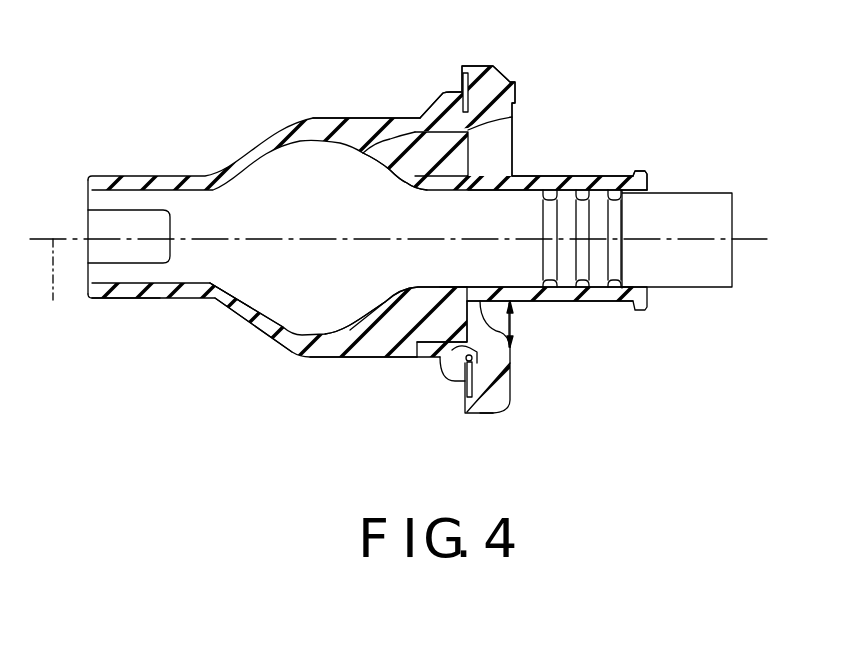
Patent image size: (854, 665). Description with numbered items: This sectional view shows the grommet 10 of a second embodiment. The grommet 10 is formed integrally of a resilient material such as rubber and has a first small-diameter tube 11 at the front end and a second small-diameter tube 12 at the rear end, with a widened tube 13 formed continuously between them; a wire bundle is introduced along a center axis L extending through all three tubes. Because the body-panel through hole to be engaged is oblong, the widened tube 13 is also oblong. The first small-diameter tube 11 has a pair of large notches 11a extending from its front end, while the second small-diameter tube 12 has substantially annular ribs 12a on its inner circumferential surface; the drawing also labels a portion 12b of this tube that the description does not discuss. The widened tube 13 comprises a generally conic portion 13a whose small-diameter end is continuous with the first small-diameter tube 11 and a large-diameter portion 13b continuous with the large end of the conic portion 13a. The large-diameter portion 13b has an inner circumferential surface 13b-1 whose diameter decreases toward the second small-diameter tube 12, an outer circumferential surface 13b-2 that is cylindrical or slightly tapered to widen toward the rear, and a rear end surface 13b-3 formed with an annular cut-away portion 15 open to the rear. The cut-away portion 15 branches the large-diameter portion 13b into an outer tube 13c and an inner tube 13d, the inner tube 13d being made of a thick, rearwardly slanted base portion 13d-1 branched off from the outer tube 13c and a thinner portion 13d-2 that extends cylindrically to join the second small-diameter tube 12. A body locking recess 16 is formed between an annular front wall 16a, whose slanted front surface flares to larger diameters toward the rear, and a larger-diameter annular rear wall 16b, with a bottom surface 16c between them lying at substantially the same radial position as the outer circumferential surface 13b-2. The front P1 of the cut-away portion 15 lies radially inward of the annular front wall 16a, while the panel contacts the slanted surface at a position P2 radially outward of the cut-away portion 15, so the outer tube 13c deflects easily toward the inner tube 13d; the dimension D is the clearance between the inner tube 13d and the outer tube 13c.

The grommet 10 is at (244, 81).
The first small-diameter tube 11 is at (133, 175).
The large notches 11a is at (123, 265).
The center axis L is at (55, 281).
The second small-diameter tube 12 is at (613, 175).
The annular ribs 12a is at (658, 287).
The tube end lip 12b is at (617, 218).
The widened tube 13 is at (287, 340).
The conic portion 13a is at (240, 317).
The large-diameter portion 13b is at (367, 353).
The inner circumferential surface 13b-1 is at (392, 182).
The outer circumferential surface 13b-2 is at (397, 117).
The rear end surface 13b-3 is at (512, 377).
The outer tube 13c is at (510, 350).
The inner tube 13d is at (628, 263).
The base portion 13d-1 is at (387, 310).
The thinner portion 13d-2 is at (462, 287).
The cut-away portion 15 is at (530, 327).
The body locking recess 16 is at (466, 411).
The annular front wall 16a is at (433, 377).
The annular rear wall 16b is at (487, 412).
The bottom surface 16c is at (479, 385).
The dimension D is at (509, 301).
The front of the cut-away portion P1 is at (363, 156).
The position P2 is at (423, 116).